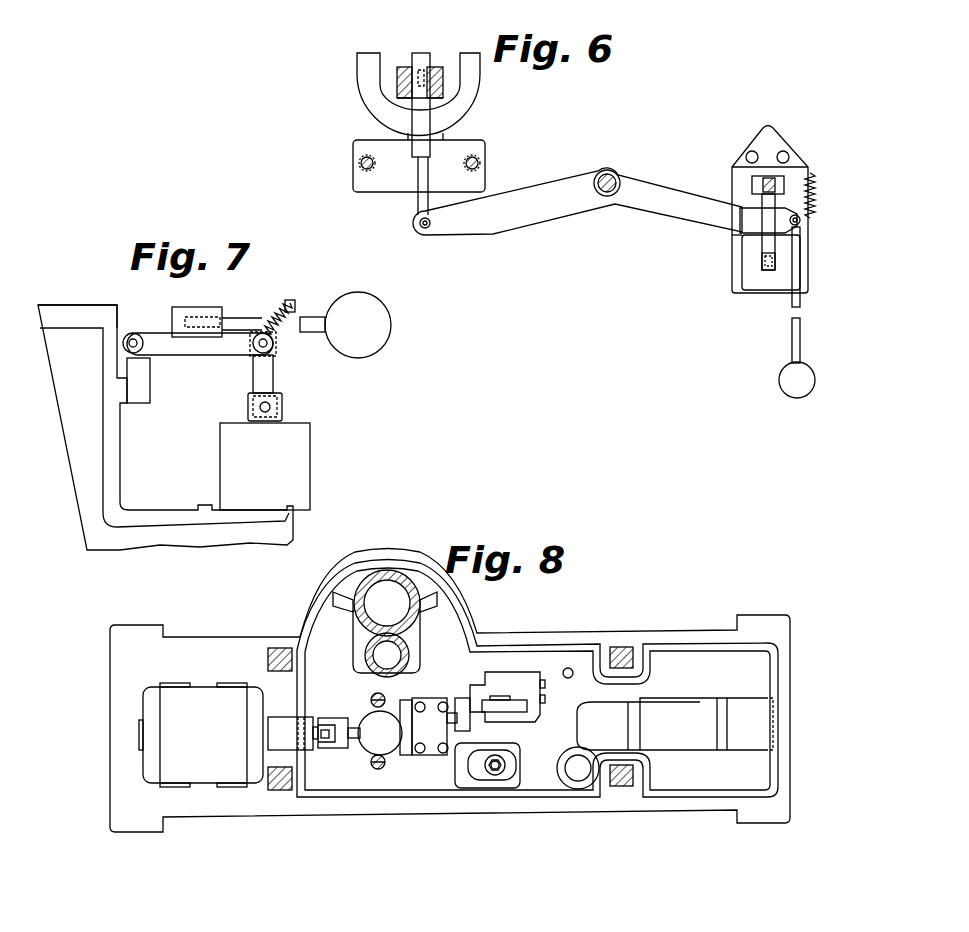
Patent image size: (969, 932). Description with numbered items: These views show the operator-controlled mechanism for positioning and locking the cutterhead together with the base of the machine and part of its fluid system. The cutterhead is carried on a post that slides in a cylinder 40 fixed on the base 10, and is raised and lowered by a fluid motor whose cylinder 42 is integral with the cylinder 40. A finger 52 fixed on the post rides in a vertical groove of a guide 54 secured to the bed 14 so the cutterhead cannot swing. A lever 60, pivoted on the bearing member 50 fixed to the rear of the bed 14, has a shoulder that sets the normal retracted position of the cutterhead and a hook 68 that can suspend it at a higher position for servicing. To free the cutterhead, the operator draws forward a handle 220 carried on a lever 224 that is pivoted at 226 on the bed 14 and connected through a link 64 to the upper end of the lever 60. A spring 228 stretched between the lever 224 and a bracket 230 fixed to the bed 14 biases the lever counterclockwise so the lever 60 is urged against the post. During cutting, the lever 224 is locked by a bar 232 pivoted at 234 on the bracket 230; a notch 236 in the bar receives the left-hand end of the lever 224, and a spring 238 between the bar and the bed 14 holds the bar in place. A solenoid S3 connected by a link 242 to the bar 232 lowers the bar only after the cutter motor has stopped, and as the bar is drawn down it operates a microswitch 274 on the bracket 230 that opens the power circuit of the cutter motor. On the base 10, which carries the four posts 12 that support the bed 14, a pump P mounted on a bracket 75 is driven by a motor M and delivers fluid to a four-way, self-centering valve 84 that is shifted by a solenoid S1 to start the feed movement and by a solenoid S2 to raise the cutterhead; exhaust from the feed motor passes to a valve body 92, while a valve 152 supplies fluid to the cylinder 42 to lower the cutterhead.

In FIG. 6, the bearing member 50 is at (403, 68).
In FIG. 6, the finger 52 is at (473, 85).
In FIG. 6, the guide 54 is at (470, 145).
In FIG. 6, the lever 60 is at (405, 90).
In FIG. 6, the link 64 is at (418, 204).
In FIG. 6, the hook 68 is at (424, 55).
In FIG. 6, the lever 224 is at (548, 213).
In FIG. 7, the lever 224 is at (207, 312).
In FIG. 6, the pivot 226 is at (607, 175).
In FIG. 6, the spring 228 is at (812, 173).
In FIG. 6, the bracket 230 is at (735, 242).
In FIG. 7, the bracket 230 is at (70, 337).
In FIG. 6, the bar 232 is at (748, 202).
In FIG. 7, the bar 232 is at (190, 352).
In FIG. 7, the pivot 234 is at (136, 340).
In FIG. 7, the notch 236 is at (213, 338).
In FIG. 7, the spring 238 is at (288, 305).
In FIG. 6, the link 242 is at (768, 272).
In FIG. 7, the link 242 is at (268, 373).
In FIG. 6, the microswitch 274 is at (755, 175).
In FIG. 7, the microswitch 274 is at (152, 358).
In FIG. 6, the handle 220 is at (787, 378).
In FIG. 7, the handle 220 is at (383, 323).
In FIG. 6, the solenoid S3 is at (748, 280).
In FIG. 7, the solenoid S3 is at (293, 456).
In FIG. 7, the bed 14 is at (70, 467).
In FIG. 8, the base 10 is at (211, 810).
In FIG. 8, the posts 12 is at (268, 659).
In FIG. 8, the cylinder 40 is at (373, 580).
In FIG. 8, the cylinder 42 is at (409, 653).
In FIG. 8, the bracket 75 is at (430, 745).
In FIG. 8, the four-way self-centering valve 84 is at (685, 743).
In FIG. 8, the valve body 92 is at (492, 788).
In FIG. 8, the valve 152 is at (514, 677).
In FIG. 8, the motor M is at (205, 740).
In FIG. 8, the pump P is at (377, 735).
In FIG. 8, the solenoid S1 is at (583, 722).
In FIG. 8, the solenoid S2 is at (747, 738).